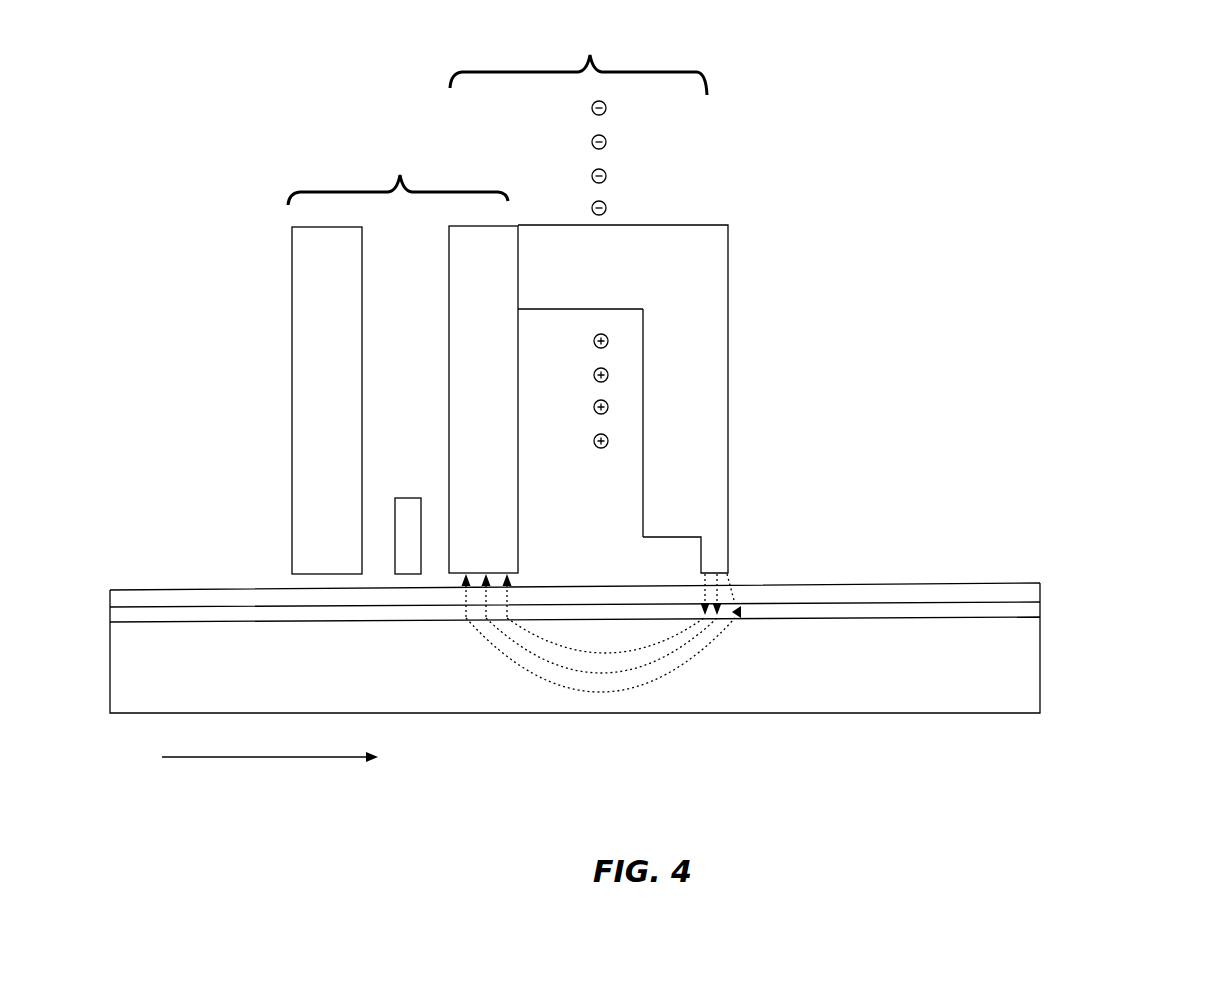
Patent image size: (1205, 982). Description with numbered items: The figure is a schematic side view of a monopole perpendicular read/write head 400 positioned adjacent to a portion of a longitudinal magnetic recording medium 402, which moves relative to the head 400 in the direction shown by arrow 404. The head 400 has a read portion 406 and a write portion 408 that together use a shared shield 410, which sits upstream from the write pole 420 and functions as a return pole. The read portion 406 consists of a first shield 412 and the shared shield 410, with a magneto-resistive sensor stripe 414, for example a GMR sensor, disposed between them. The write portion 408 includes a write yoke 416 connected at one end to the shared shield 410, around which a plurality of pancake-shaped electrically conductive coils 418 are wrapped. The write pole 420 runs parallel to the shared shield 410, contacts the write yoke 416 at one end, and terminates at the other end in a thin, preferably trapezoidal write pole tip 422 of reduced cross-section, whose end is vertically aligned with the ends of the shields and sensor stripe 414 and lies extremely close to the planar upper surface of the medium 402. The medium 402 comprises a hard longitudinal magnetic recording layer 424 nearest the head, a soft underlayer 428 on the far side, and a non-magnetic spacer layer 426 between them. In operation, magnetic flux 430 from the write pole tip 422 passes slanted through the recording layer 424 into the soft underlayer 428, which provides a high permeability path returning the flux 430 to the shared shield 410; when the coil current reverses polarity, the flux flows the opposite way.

The read/write head 400 is at (834, 282).
The magnetic recording medium 402 is at (1115, 647).
The arrow 404 is at (253, 758).
The read portion 406 is at (398, 175).
The write portion 408 is at (578, 62).
The shared shield 410 is at (473, 317).
The first shield 412 is at (322, 337).
The MR sensor stripe 414 is at (409, 512).
The write yoke 416 is at (642, 240).
The coils 418 is at (607, 143).
The write pole 420 is at (710, 393).
The write pole tip 422 is at (712, 553).
The magnetic recording layer 424 is at (110, 595).
The non-magnetic spacer layer 426 is at (110, 618).
The soft underlayer 428 is at (110, 675).
The magnetic flux 430 is at (733, 593).